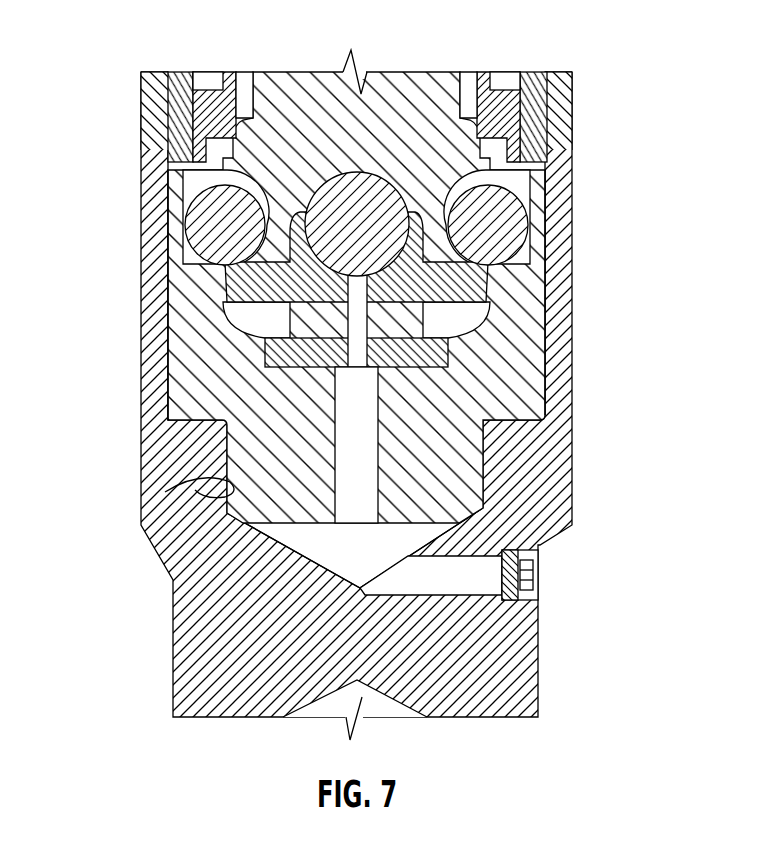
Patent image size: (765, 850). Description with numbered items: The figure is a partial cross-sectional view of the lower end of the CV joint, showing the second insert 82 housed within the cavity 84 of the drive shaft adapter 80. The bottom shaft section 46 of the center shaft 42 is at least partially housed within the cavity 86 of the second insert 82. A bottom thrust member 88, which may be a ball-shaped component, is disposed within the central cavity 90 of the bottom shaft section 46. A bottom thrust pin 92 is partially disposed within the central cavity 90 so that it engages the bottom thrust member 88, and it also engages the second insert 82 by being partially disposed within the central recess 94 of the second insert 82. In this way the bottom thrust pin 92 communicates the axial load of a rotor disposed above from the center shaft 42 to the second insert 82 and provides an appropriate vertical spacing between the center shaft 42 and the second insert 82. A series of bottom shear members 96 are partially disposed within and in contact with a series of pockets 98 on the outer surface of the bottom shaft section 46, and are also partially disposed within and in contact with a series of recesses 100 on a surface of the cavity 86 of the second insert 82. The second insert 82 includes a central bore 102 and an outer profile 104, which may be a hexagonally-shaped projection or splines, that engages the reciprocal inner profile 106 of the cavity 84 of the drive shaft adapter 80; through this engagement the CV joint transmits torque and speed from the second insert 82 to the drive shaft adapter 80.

The center shaft 42 is at (433, 95).
The bottom shaft section 46 is at (296, 193).
The drive shaft adapter 80 is at (183, 643).
The second insert 82 is at (537, 298).
The cavity 84 is at (280, 540).
The cavity 86 is at (272, 350).
The bottom thrust member 88 is at (380, 192).
The central cavity 90 is at (402, 345).
The bottom thrust pin 92 is at (545, 408).
The central recess 94 is at (170, 398).
The bottom shear members 96 is at (200, 185).
The pockets 98 is at (238, 218).
The recesses 100 is at (190, 292).
The central bore 102 is at (378, 443).
The outer profile 104 is at (475, 512).
The inner profile 106 is at (165, 492).